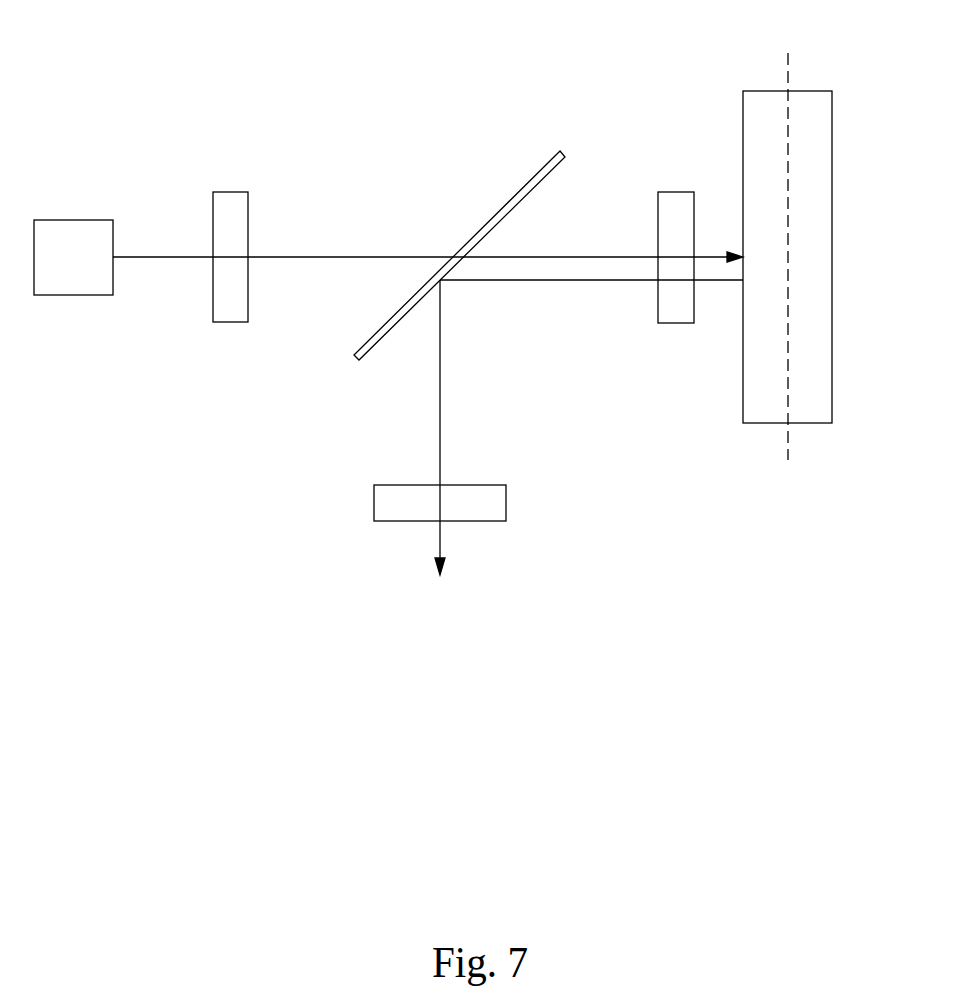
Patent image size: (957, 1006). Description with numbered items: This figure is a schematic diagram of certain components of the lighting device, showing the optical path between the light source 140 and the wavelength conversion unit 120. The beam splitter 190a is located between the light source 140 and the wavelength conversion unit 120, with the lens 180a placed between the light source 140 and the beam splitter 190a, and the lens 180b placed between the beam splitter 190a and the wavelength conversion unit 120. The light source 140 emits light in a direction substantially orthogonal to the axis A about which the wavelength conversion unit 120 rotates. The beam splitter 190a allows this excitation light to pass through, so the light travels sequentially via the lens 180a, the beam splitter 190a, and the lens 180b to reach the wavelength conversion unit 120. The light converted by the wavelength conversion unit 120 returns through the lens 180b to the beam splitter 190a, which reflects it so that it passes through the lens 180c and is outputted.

The light source 140 is at (95, 220).
The lens 180a is at (228, 207).
The beam splitter 190a is at (561, 153).
The lens 180b is at (679, 210).
The wavelength conversion unit 120 is at (758, 103).
The axis A is at (788, 72).
The lens 180c is at (495, 505).